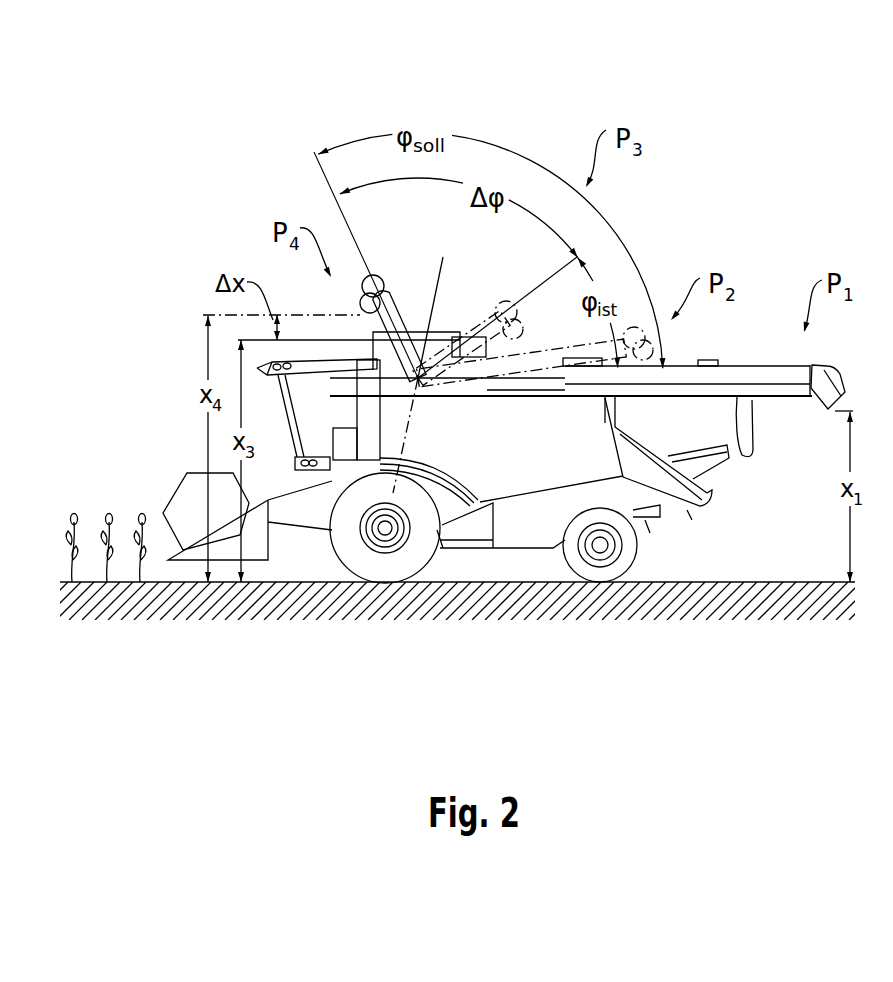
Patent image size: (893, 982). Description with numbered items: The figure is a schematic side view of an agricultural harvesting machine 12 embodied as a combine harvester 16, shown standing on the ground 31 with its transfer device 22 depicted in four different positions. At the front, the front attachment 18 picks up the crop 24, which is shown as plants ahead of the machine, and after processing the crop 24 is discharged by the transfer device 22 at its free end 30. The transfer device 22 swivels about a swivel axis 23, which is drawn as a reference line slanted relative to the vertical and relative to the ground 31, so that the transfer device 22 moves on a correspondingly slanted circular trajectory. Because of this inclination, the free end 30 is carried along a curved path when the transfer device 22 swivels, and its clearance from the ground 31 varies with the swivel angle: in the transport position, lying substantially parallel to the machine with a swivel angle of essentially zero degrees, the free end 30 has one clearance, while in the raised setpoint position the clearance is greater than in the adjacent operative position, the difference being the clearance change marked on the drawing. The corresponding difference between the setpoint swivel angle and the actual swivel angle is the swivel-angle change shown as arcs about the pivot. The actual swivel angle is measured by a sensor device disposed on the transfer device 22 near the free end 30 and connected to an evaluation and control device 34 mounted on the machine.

The agricultural harvesting machine 12 is at (494, 301).
The combine harvester 16 is at (460, 457).
The front attachment 18 is at (158, 480).
The transfer device 22 is at (722, 377).
The swivel axis 23 is at (444, 262).
The crop 24 is at (100, 535).
The free end 30 is at (378, 275).
The ground 31 is at (731, 592).
The evaluation and control device 34 is at (347, 440).